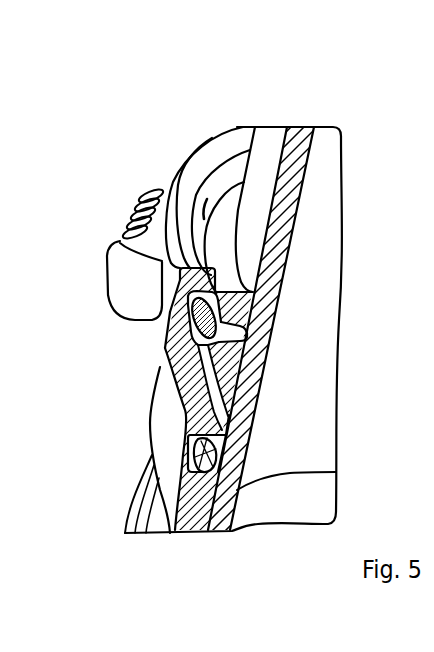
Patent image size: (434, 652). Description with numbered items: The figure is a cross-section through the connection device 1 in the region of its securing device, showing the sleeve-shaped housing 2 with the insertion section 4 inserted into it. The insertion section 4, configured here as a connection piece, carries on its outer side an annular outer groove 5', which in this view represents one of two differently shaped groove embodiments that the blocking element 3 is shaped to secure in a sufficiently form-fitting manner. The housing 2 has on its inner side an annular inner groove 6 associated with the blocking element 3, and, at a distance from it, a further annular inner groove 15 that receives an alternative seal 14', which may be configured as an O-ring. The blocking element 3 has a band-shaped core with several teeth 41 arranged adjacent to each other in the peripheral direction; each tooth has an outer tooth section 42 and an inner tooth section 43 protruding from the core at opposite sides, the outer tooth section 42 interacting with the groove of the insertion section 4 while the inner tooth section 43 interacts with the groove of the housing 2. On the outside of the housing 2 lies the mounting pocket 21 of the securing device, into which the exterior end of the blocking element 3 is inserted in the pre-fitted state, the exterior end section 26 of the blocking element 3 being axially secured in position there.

The connection device 1 is at (166, 118).
The housing 2 is at (136, 427).
The blocking element 3 is at (138, 186).
The insertion section 4 is at (304, 245).
The outer groove 5' is at (252, 343).
The inner groove 6 is at (193, 360).
The alternative seal 14' is at (146, 468).
The further annular inner groove 15 is at (227, 447).
The mounting pocket 21 is at (115, 267).
The end section 26 is at (127, 218).
The teeth 41 is at (174, 315).
The outer tooth section 42 is at (228, 345).
The inner tooth section 43 is at (172, 292).